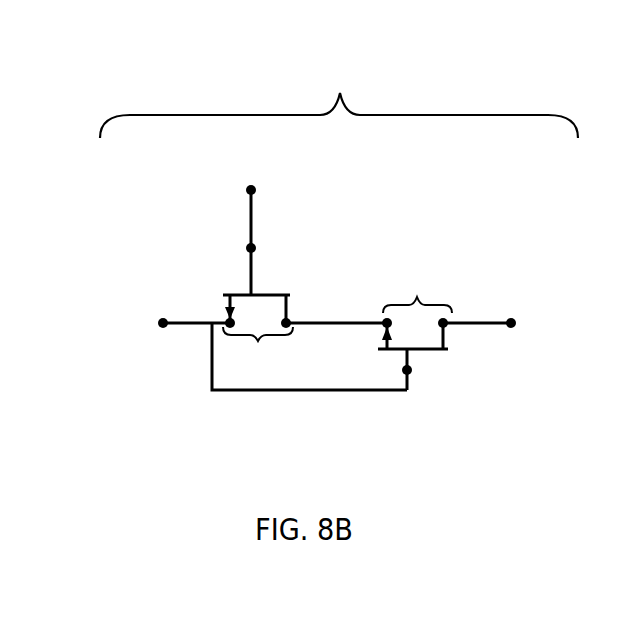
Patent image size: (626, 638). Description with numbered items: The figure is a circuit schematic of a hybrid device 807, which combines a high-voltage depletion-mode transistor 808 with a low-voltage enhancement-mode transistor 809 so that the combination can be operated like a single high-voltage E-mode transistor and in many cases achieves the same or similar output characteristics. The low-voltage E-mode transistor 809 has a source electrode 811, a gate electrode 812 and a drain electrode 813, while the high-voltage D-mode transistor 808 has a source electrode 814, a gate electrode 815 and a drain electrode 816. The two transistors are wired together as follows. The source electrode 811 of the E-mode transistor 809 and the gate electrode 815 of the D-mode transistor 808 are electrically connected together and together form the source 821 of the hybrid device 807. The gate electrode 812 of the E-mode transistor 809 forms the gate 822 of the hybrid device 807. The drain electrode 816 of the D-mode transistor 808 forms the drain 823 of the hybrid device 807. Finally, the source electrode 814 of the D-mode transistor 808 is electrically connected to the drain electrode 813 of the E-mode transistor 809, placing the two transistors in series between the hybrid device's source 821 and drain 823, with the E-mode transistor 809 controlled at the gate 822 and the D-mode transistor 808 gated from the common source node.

The hybrid device 807 is at (339, 104).
The high-voltage depletion-mode transistor 808 is at (415, 331).
The low-voltage enhancement-mode transistor 809 is at (258, 310).
The source electrode 811 is at (229, 315).
The gate electrode 812 is at (244, 250).
The drain electrode 813 is at (292, 318).
The source electrode 814 is at (382, 327).
The gate electrode 815 is at (412, 371).
The drain electrode 816 is at (449, 328).
The source 821 is at (150, 327).
The gate 822 is at (254, 185).
The drain 823 is at (515, 318).